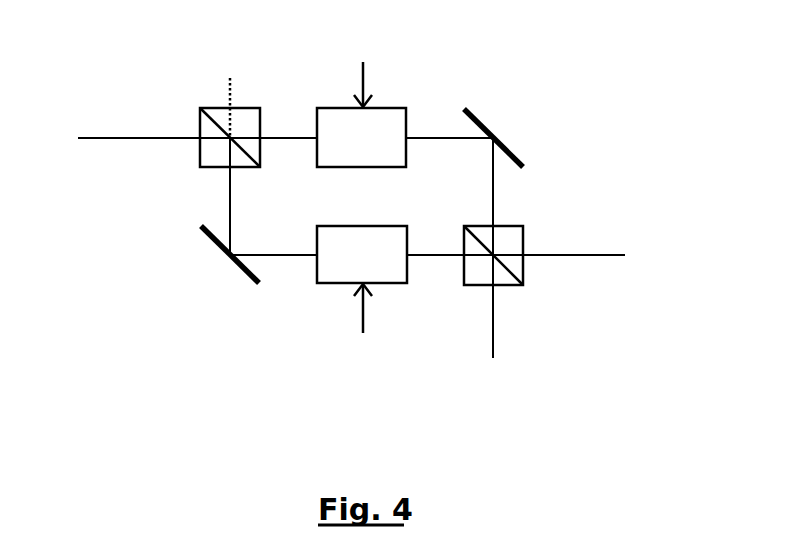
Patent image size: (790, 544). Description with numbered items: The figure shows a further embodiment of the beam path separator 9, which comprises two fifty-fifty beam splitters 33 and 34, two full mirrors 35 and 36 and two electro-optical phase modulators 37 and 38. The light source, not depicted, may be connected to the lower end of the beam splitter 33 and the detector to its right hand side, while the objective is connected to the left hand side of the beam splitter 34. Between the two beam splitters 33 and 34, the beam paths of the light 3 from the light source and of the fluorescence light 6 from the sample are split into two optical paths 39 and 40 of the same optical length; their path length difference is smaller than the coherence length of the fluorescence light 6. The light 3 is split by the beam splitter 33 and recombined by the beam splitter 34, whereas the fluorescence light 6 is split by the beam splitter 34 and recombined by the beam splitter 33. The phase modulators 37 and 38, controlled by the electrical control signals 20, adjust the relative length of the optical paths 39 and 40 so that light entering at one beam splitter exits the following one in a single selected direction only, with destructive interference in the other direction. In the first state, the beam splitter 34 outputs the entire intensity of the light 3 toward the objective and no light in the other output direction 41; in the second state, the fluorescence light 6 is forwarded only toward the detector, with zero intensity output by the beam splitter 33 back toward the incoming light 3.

The light from the light source 3 is at (98, 140).
The fluorescence light 6 is at (582, 257).
The beam path separator 9 is at (598, 107).
The electrical control signals 20 is at (358, 90).
The 50:50 beam splitter 33 is at (523, 233).
The 50:50 beam splitter 34 is at (202, 147).
The full mirror 35 is at (475, 117).
The full mirror 36 is at (237, 265).
The electro-optical phase modulator 37 is at (387, 108).
The electro-optical phase modulator 38 is at (393, 285).
The optical path 39 is at (272, 133).
The optical path 40 is at (292, 258).
The other output direction 41 is at (228, 92).